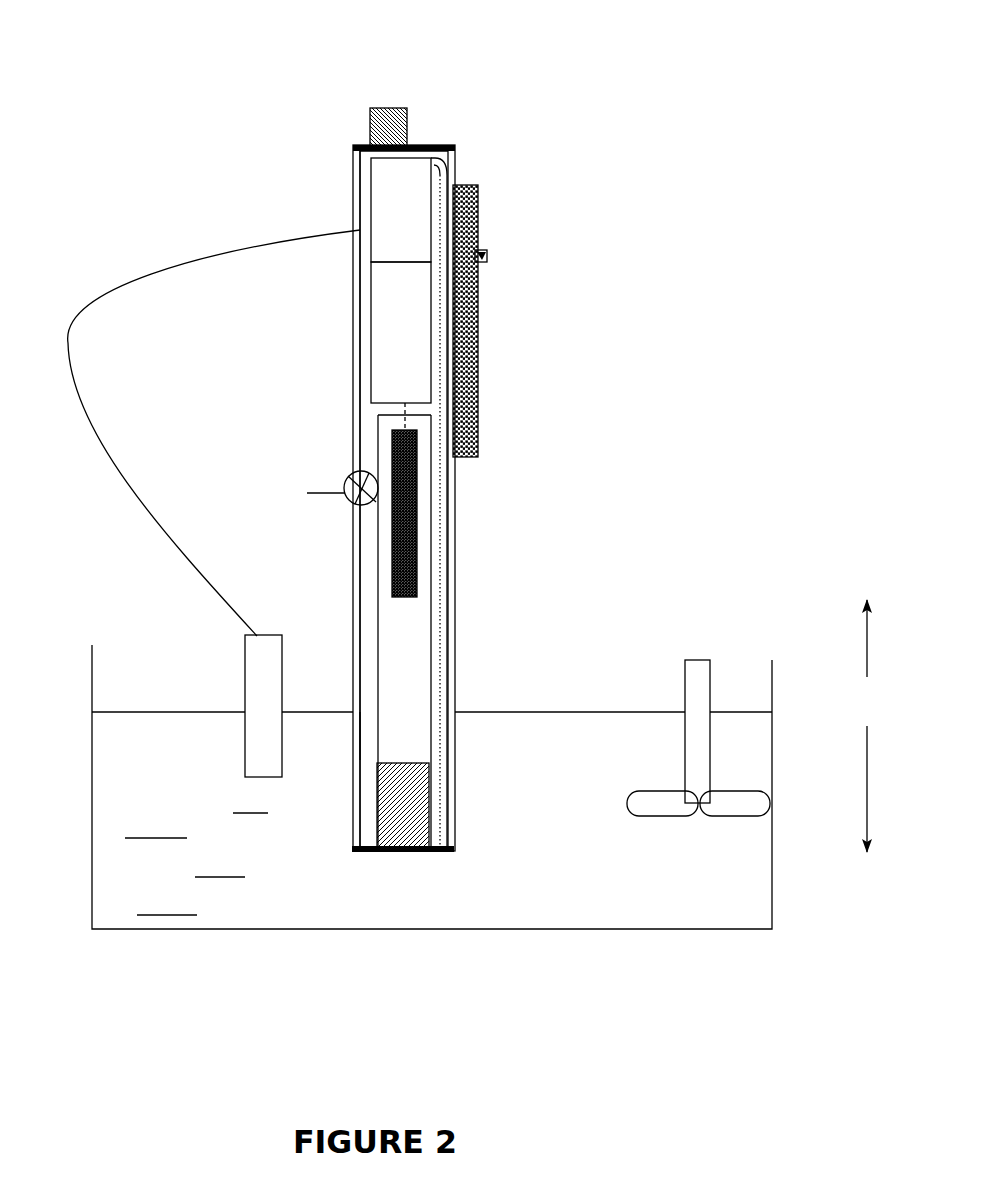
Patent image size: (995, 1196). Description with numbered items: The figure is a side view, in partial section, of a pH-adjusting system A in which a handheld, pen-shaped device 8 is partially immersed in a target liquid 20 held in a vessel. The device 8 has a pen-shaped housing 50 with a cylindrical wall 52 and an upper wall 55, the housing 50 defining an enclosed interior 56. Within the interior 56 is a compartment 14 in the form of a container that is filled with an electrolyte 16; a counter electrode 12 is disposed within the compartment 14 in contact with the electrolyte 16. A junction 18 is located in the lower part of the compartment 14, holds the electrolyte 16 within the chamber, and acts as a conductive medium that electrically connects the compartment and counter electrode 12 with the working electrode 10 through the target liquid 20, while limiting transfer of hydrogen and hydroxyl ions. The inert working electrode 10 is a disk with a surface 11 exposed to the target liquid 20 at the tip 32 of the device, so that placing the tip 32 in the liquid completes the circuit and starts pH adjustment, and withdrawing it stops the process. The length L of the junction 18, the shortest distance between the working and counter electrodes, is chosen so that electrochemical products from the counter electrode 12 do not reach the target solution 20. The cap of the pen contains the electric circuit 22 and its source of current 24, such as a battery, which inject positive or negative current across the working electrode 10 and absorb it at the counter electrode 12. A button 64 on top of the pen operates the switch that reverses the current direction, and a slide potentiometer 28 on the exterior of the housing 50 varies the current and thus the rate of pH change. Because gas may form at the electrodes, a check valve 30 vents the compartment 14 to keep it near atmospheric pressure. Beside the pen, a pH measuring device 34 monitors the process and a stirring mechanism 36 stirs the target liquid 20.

The system for adjustment of pH A is at (237, 198).
The handheld device 8 is at (318, 445).
The working electrode 10 is at (448, 610).
The surface 11 is at (393, 855).
The counter electrode 12 is at (412, 519).
The compartment 14 is at (373, 668).
The electrolyte 16 is at (430, 685).
The junction 18 is at (418, 813).
The target liquid 20 is at (208, 720).
The electric circuit 22 is at (408, 237).
The source of current 24 is at (377, 327).
The slide potentiometer 28 is at (487, 258).
The check valve 30 is at (342, 480).
The tip 32 is at (362, 813).
The pH measuring device 34 is at (245, 667).
The stirring mechanism 36 is at (698, 690).
The housing 50 is at (455, 493).
The cylindrical wall 52 is at (352, 303).
The upper wall 55 is at (442, 138).
The interior 56 is at (358, 735).
The button 64 is at (362, 118).
The length of the junction L is at (869, 726).